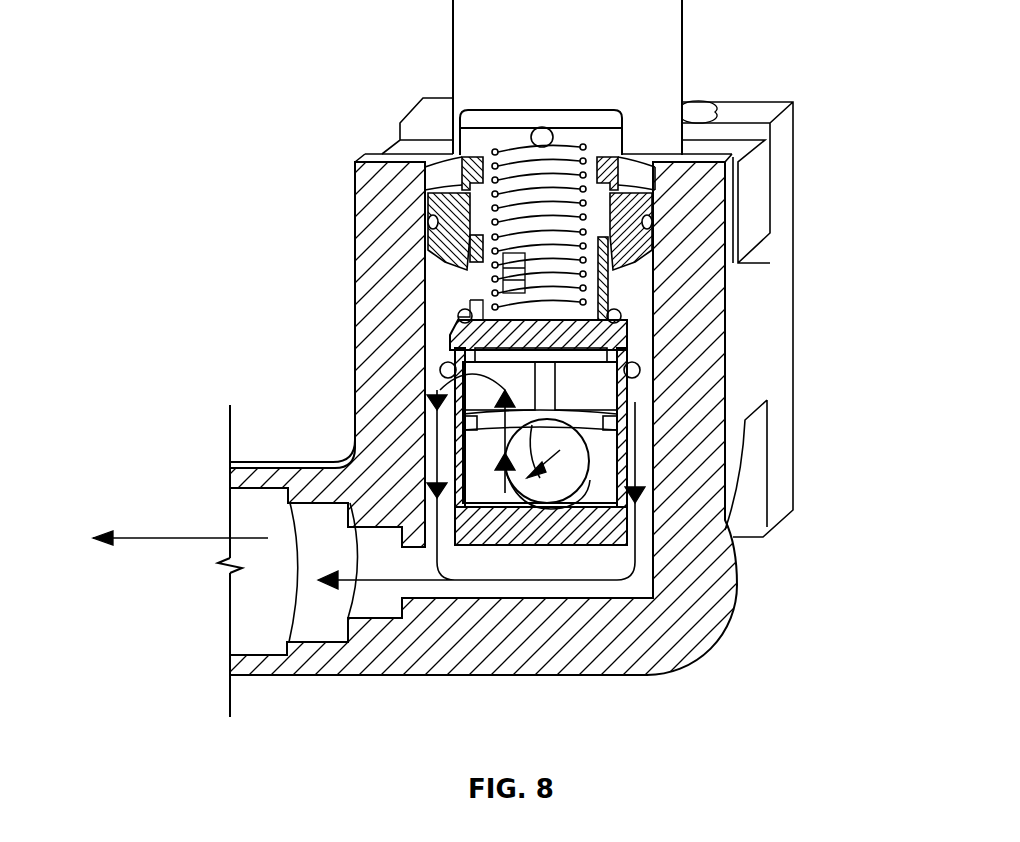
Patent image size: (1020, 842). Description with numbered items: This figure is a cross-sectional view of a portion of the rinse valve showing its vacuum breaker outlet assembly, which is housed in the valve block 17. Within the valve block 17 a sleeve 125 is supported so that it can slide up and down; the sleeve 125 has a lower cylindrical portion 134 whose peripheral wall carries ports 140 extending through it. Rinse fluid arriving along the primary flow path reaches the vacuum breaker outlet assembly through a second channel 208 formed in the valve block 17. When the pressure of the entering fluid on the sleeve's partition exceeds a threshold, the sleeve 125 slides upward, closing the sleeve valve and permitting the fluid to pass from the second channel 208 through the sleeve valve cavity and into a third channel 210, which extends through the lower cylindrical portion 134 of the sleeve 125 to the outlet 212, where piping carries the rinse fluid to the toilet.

The valve block 17 is at (667, 583).
The sleeve 125 is at (605, 338).
The lower cylindrical portion 134 is at (610, 422).
The port 140 is at (483, 390).
The second channel 208 is at (577, 463).
The third channel 210 is at (383, 583).
The outlet 212 is at (197, 538).